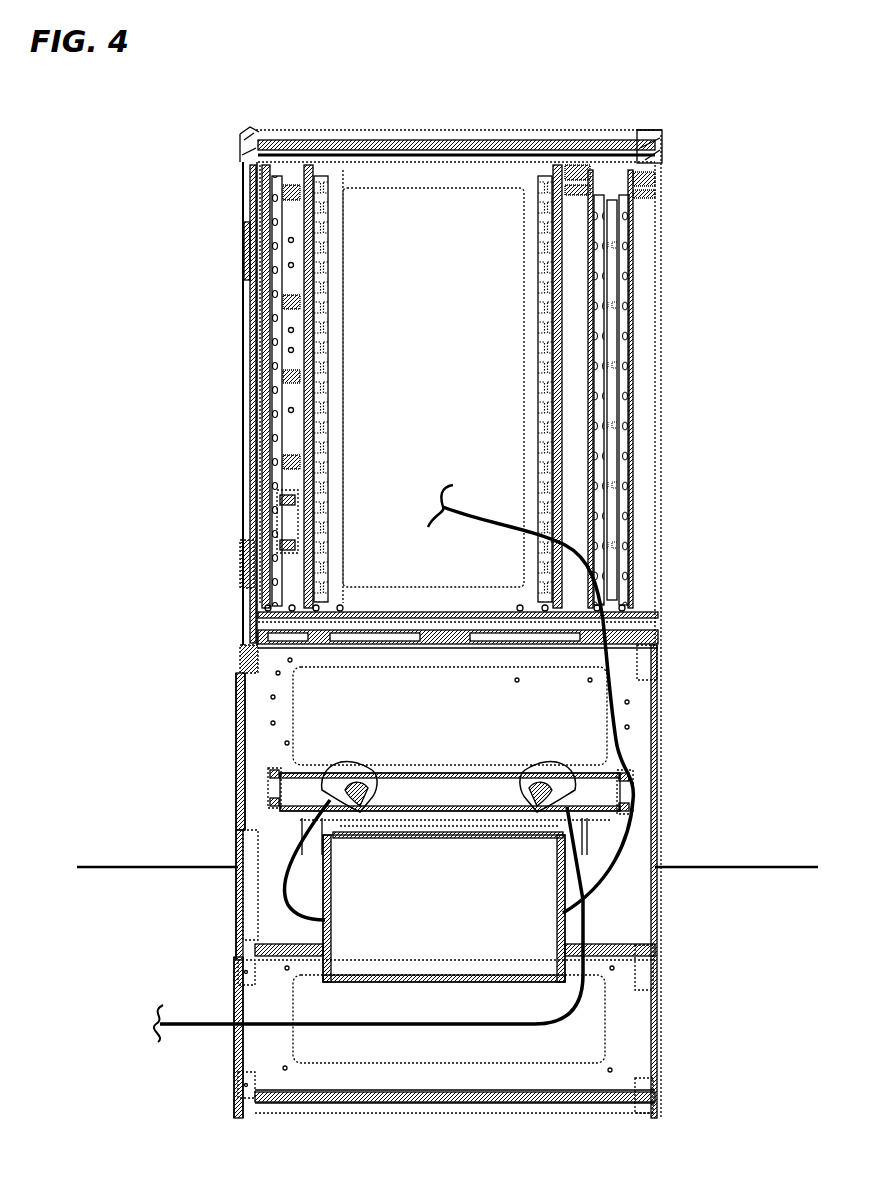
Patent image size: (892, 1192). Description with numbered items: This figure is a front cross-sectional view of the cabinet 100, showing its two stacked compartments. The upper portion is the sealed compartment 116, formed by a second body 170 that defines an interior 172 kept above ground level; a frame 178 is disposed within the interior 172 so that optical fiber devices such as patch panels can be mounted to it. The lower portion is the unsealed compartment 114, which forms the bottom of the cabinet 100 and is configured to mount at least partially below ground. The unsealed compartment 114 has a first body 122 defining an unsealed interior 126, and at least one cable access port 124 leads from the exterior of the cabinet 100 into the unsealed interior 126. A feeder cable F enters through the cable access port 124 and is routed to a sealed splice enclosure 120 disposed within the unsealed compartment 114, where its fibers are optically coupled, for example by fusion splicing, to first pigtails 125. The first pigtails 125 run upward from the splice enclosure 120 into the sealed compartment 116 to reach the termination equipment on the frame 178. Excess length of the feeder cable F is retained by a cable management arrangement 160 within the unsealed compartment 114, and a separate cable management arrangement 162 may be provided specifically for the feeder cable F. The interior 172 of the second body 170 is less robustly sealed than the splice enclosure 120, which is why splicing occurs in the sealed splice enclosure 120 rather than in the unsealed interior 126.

The cabinet 100 is at (236, 190).
The sealed compartment 116 is at (243, 348).
The frame 178 is at (318, 400).
The interior 172 is at (452, 315).
The second body 170 is at (663, 315).
The first body 122 is at (237, 738).
The unsealed compartment 114 is at (237, 792).
The cable access port 124 is at (233, 1024).
The unsealed interior 126 is at (472, 735).
The cable management arrangement 160 is at (553, 784).
The cable management arrangement 162 is at (553, 784).
The sealed splice enclosure 120 is at (474, 913).
The first pigtail 125 is at (615, 715).
The feeder cable F is at (198, 1030).